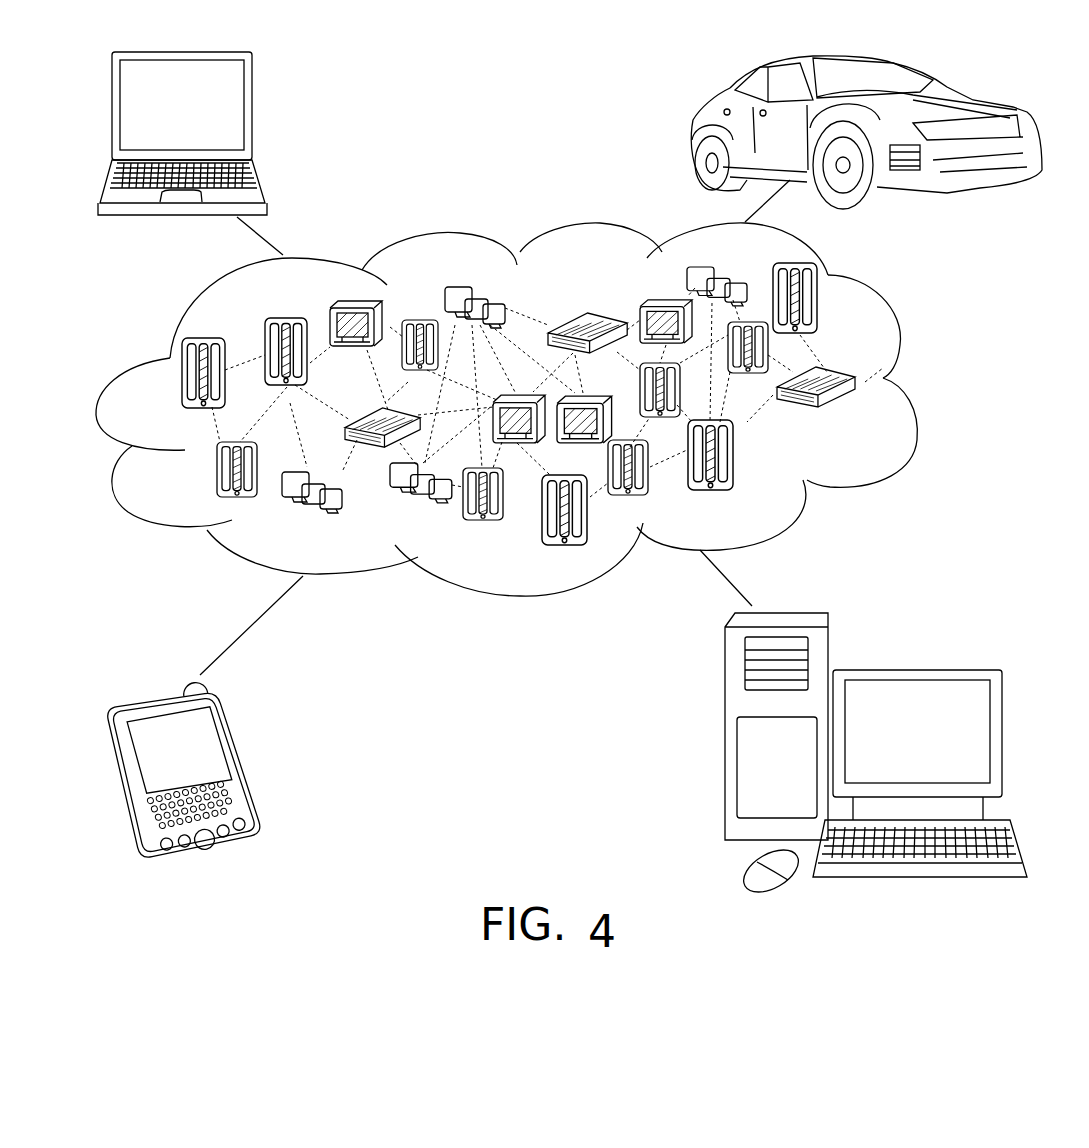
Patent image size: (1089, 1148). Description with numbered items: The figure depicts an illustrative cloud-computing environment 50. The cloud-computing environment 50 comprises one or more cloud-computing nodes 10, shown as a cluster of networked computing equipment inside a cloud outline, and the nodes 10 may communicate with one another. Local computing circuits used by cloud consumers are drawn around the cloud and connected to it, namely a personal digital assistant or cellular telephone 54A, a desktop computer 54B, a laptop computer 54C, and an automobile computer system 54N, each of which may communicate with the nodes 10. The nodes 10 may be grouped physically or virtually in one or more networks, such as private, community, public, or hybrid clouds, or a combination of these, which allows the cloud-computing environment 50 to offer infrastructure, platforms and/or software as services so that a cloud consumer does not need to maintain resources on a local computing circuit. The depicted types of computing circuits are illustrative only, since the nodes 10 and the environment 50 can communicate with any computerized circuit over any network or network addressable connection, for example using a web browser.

The laptop computer 54C is at (253, 114).
The automobile computer system 54N is at (693, 130).
The personal digital assistant or cellular telephone 54A is at (242, 762).
The desktop computer 54B is at (913, 672).
The cloud-computing environment 50 is at (917, 383).
The cloud-computing node 10 is at (856, 411).